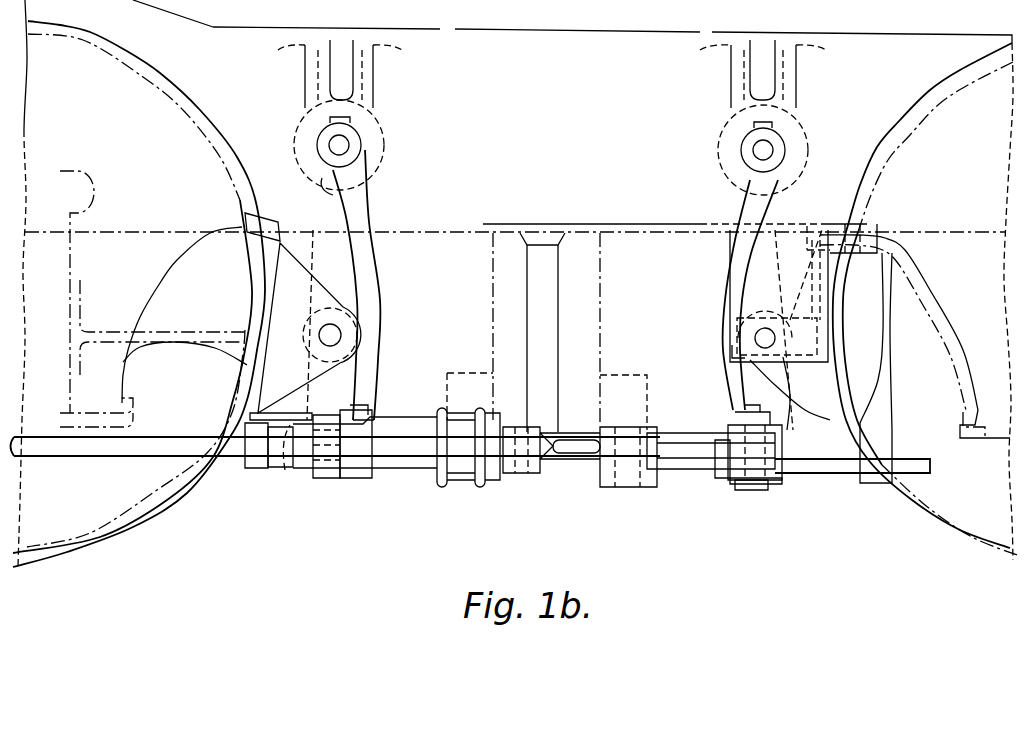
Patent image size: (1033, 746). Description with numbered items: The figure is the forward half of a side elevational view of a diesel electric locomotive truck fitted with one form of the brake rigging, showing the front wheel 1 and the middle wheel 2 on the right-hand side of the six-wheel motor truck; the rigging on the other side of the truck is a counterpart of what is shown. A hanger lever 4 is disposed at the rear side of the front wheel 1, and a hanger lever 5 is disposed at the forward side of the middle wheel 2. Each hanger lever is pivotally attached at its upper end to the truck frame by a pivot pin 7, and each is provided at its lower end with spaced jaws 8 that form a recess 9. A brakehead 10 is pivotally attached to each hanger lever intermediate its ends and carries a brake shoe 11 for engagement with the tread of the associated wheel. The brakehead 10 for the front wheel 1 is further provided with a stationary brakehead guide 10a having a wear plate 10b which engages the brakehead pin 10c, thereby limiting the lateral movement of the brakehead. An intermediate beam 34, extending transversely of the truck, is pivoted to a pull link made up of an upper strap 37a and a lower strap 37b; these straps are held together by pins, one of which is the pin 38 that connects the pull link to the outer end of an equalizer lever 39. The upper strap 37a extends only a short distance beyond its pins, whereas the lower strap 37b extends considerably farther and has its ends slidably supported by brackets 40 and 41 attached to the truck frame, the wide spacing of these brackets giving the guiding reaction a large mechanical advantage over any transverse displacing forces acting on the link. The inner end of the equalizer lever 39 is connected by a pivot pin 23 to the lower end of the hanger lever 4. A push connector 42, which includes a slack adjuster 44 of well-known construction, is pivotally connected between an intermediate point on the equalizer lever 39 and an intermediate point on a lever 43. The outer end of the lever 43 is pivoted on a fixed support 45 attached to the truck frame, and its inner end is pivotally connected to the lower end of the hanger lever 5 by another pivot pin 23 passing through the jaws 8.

The front wheel 1 is at (913, 505).
The middle wheel 2 is at (148, 512).
The hanger lever 4 is at (740, 203).
The hanger lever 5 is at (360, 210).
The pivot pin 7 is at (343, 145).
The spaced jaws 8 is at (370, 460).
The recess 9 is at (318, 475).
The brakehead 10 is at (298, 250).
The stationary brakehead guide 10a is at (745, 297).
The wear plate 10b is at (745, 327).
The brakehead pin 10c is at (735, 348).
The brake shoe 11 is at (262, 222).
The pivot pin 23 is at (345, 478).
The intermediate beam 34 is at (580, 455).
The upper strap 37a is at (668, 433).
The lower strap 37b is at (470, 470).
The pin 38 is at (745, 484).
The equalizer lever 39 is at (725, 470).
The bracket 40 is at (548, 372).
The bracket 41 is at (884, 385).
The push connector 42 is at (250, 465).
The lever 43 is at (285, 470).
The slack adjuster 44 is at (437, 414).
The fixed support 45 is at (275, 468).